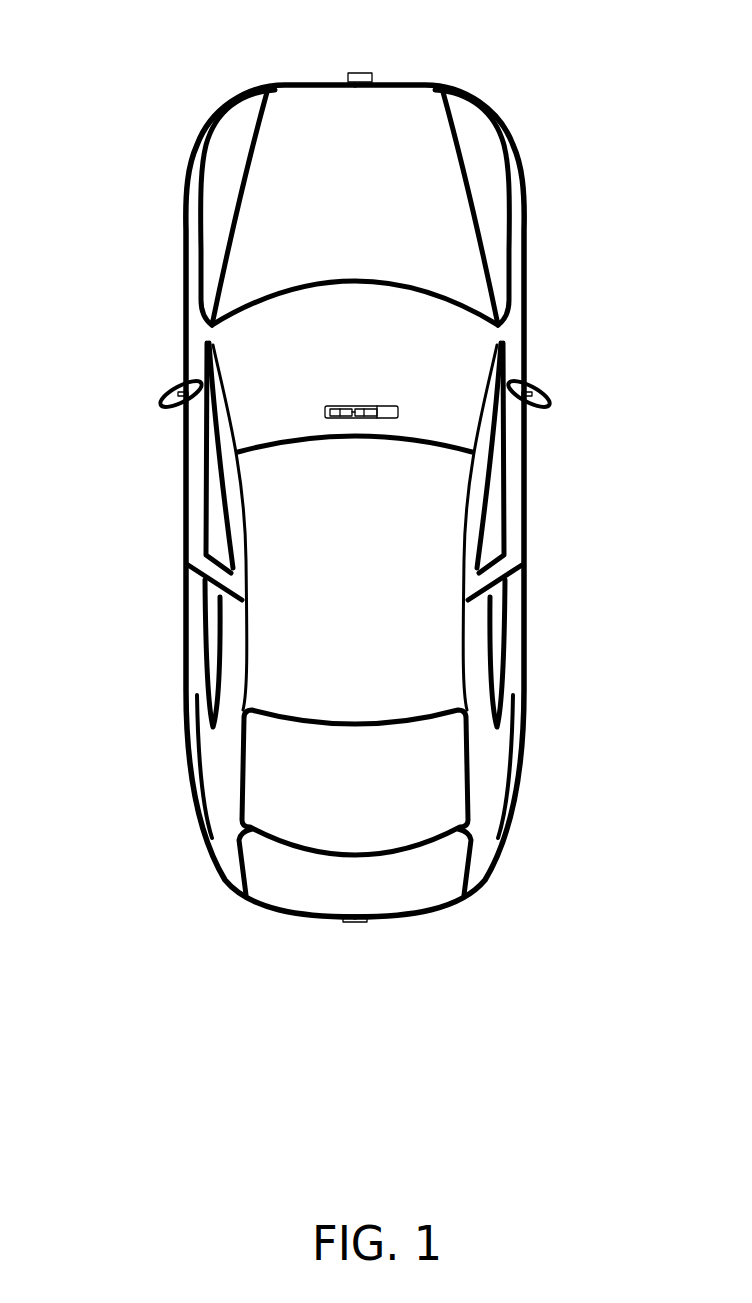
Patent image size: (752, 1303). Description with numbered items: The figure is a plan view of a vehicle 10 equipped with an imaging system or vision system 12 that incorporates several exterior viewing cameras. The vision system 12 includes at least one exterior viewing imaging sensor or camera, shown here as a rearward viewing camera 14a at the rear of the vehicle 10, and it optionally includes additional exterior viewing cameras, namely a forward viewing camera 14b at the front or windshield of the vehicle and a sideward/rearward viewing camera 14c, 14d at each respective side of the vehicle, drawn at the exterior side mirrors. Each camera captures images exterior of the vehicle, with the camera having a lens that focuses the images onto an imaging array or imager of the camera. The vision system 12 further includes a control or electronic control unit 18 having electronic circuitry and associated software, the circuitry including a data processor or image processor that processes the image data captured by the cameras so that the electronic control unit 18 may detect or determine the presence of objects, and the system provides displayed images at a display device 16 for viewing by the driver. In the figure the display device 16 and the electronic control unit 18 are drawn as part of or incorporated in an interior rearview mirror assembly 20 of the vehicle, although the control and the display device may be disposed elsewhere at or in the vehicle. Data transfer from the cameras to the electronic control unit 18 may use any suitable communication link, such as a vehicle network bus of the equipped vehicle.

The vehicle 10 is at (118, 89).
The vision system 12 is at (318, 932).
The rearward viewing camera 14a is at (360, 923).
The forward viewing camera 14b is at (364, 72).
The sideward/rearward viewing camera 14c is at (173, 383).
The sideward/rearward viewing camera 14d is at (533, 383).
The display device 16 is at (340, 409).
The electronic control unit 18 is at (360, 408).
The interior rearview mirror assembly 20 is at (400, 407).